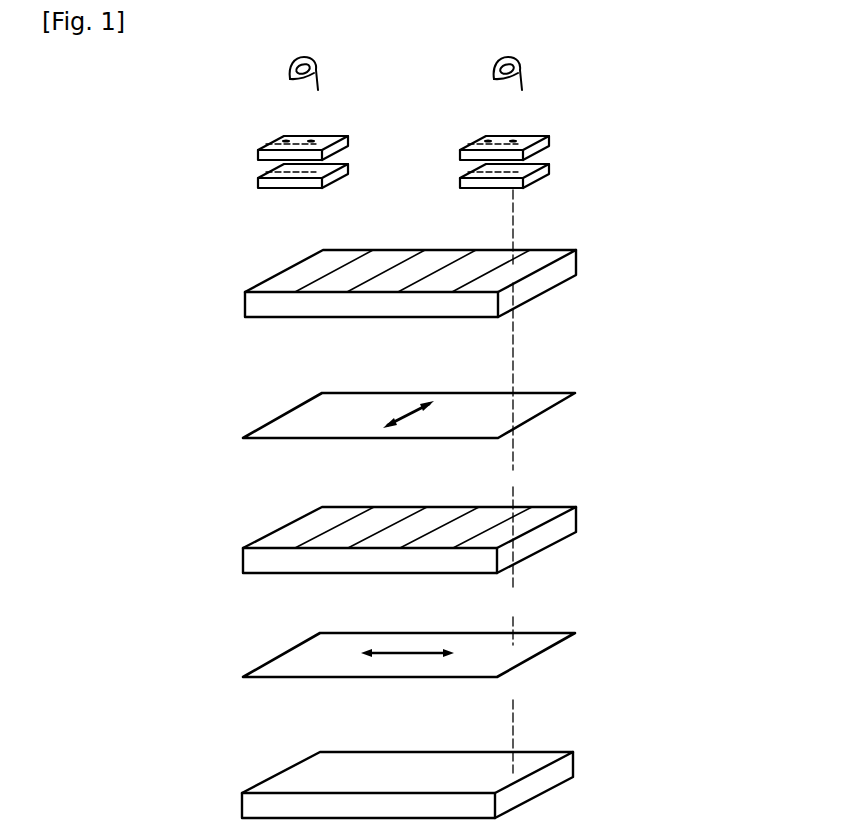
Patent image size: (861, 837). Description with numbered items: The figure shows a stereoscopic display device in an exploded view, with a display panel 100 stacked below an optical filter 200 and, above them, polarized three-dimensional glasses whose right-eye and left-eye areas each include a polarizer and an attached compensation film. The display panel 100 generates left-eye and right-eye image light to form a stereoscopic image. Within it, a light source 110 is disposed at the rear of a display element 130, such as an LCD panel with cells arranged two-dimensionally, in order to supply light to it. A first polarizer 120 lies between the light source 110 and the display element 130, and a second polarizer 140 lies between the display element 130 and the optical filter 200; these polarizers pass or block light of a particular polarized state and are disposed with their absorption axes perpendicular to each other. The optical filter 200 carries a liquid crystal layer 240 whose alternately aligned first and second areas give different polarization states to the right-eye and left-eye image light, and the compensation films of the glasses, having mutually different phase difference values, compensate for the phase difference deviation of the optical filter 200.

The display panel 100 is at (491, 605).
The light source 110 is at (454, 785).
The first polarizer 120 is at (560, 643).
The display element 130 is at (577, 520).
The second polarizer 140 is at (560, 413).
The optical filter 200 is at (504, 272).
The liquid crystal layer 240 is at (529, 249).